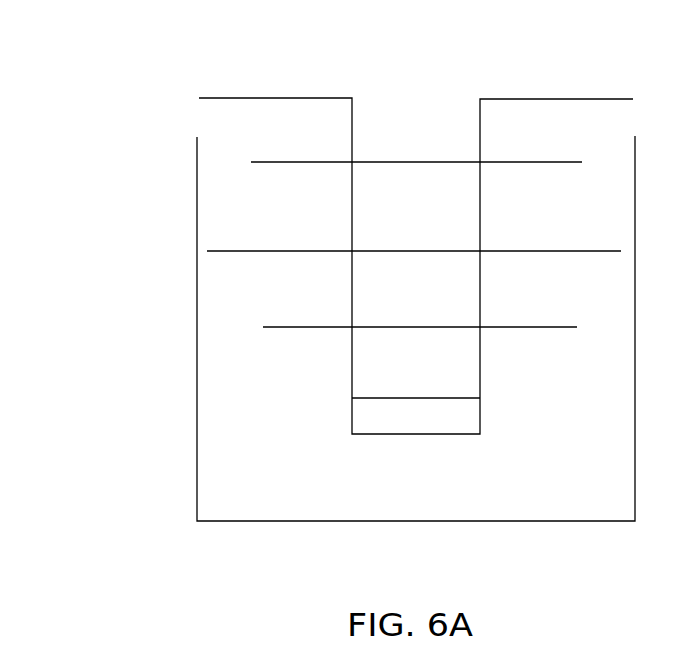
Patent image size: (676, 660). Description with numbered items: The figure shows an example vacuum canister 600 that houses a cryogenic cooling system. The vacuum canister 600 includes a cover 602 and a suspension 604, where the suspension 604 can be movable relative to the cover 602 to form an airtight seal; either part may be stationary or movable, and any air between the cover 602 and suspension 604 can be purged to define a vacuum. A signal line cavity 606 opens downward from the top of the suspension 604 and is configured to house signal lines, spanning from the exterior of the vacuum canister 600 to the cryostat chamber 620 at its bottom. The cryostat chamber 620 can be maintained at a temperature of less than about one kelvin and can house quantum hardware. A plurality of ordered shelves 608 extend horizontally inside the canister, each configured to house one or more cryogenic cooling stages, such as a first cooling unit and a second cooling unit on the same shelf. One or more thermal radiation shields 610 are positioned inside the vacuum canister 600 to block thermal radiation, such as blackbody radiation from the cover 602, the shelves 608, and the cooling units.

The vacuum canister 600 is at (125, 72).
The cover 602 is at (197, 183).
The suspension 604 is at (233, 98).
The signal line cavity 606 is at (421, 103).
The ordered shelves 608 is at (300, 162).
The thermal radiation shields 610 is at (280, 251).
The cryostat chamber 620 is at (351, 420).